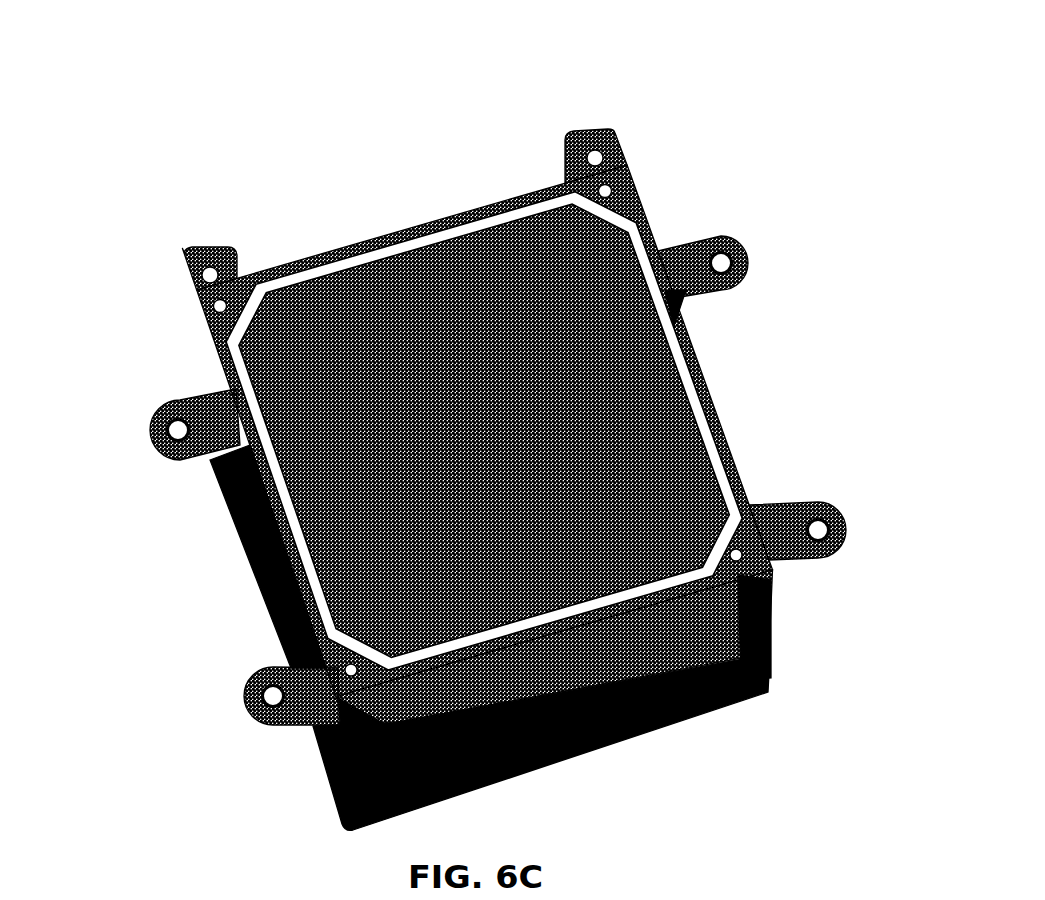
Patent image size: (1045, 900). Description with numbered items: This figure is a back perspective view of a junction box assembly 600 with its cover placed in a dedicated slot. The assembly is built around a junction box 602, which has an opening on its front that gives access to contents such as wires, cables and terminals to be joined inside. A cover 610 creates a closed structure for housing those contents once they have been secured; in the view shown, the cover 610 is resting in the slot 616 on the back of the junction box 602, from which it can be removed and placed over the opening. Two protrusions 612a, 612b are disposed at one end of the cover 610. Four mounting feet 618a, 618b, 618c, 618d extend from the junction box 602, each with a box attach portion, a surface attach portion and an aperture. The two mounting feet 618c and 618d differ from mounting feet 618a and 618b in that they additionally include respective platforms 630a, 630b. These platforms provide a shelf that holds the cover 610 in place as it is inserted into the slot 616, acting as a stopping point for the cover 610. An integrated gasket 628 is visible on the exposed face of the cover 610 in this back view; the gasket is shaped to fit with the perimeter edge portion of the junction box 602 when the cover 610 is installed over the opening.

The junction box assembly 600 is at (498, 447).
The junction box 602 is at (578, 720).
The cover 610 is at (500, 480).
The protrusion 612a is at (618, 129).
The protrusion 612b is at (233, 242).
The slot 616 is at (456, 157).
The mounting foot 618a is at (737, 253).
The mounting foot 618b is at (143, 415).
The mounting foot 618c is at (836, 512).
The mounting foot 618d is at (257, 693).
The integrated gasket 628 is at (417, 230).
The platform 630a is at (760, 571).
The platform 630b is at (328, 702).